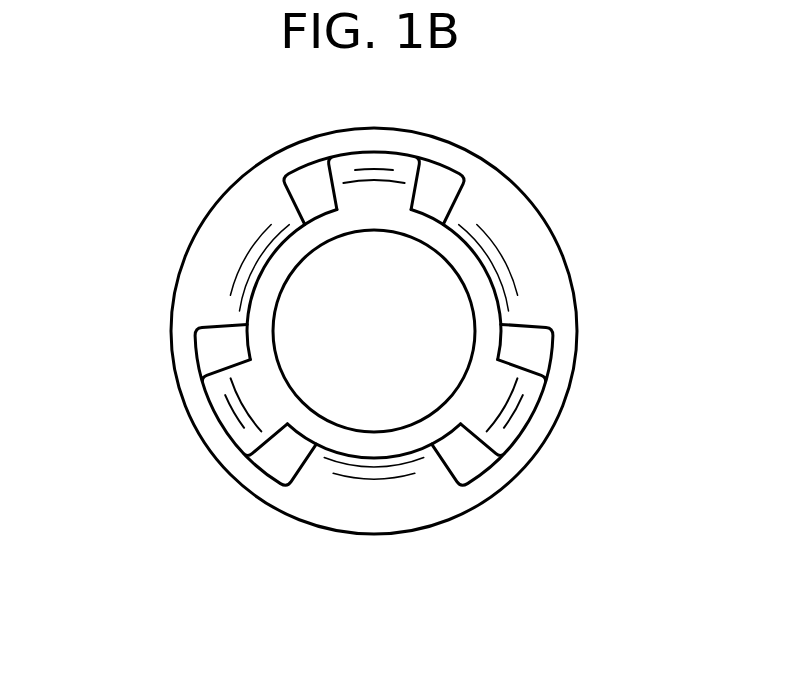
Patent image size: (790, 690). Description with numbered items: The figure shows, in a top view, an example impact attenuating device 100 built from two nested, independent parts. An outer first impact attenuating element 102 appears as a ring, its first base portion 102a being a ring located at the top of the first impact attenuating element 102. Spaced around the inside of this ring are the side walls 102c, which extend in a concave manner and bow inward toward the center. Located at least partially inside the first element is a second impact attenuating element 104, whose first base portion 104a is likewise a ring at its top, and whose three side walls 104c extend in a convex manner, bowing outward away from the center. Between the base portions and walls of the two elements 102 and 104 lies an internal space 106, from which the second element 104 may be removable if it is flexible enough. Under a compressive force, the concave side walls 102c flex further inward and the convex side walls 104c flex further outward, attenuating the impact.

The impact attenuating device 100 is at (497, 155).
The first impact attenuating element 102 is at (570, 347).
The first base portion 102a is at (553, 408).
The side walls 102c is at (233, 257).
The second impact attenuating element 104 is at (455, 253).
The first base portion 104a is at (310, 422).
The side walls 104c is at (363, 163).
The internal space 106 is at (402, 343).